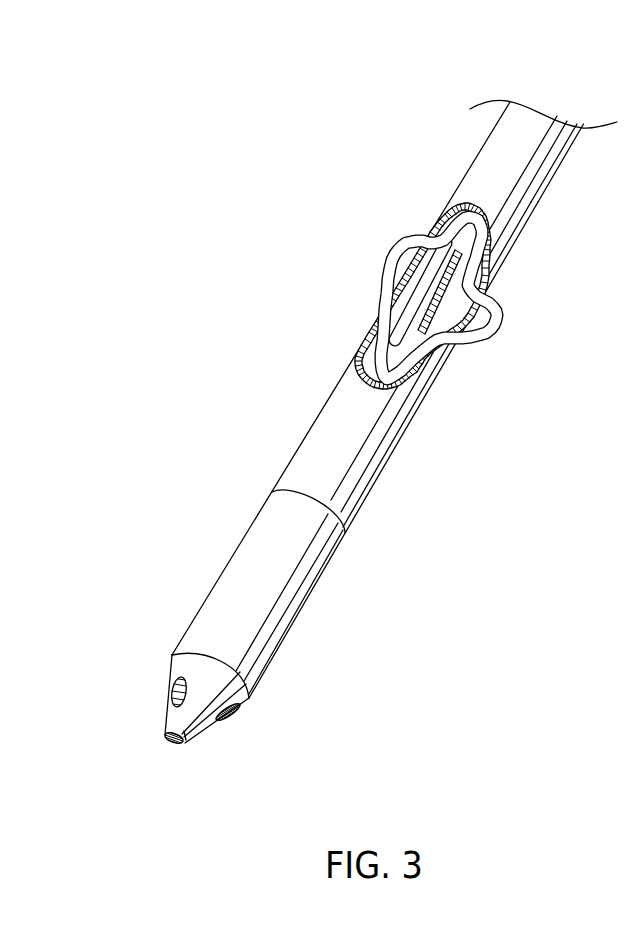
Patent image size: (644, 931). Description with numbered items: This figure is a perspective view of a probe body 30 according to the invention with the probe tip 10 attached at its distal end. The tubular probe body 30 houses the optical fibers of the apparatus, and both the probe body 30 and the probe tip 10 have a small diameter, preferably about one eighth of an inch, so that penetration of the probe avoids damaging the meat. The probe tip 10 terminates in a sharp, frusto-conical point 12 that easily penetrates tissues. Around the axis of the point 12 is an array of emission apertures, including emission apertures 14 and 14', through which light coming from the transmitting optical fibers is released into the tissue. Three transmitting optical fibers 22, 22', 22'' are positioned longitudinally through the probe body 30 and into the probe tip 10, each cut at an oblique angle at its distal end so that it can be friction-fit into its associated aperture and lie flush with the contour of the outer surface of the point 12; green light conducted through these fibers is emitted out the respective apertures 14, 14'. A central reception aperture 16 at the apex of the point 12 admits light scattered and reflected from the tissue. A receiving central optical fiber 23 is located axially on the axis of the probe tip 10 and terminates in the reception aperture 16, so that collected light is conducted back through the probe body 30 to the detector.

The probe tip 10 is at (260, 535).
The point 12 is at (195, 665).
The emission aperture 14 is at (155, 668).
The emission aperture 14' is at (267, 723).
The central reception aperture 16 is at (192, 738).
The optical fiber 22 is at (305, 470).
The optical fiber 22' is at (386, 508).
The optical fiber 22'' is at (391, 291).
The receiving central optical fiber 23 is at (175, 747).
The tubular probe body 30 is at (492, 146).